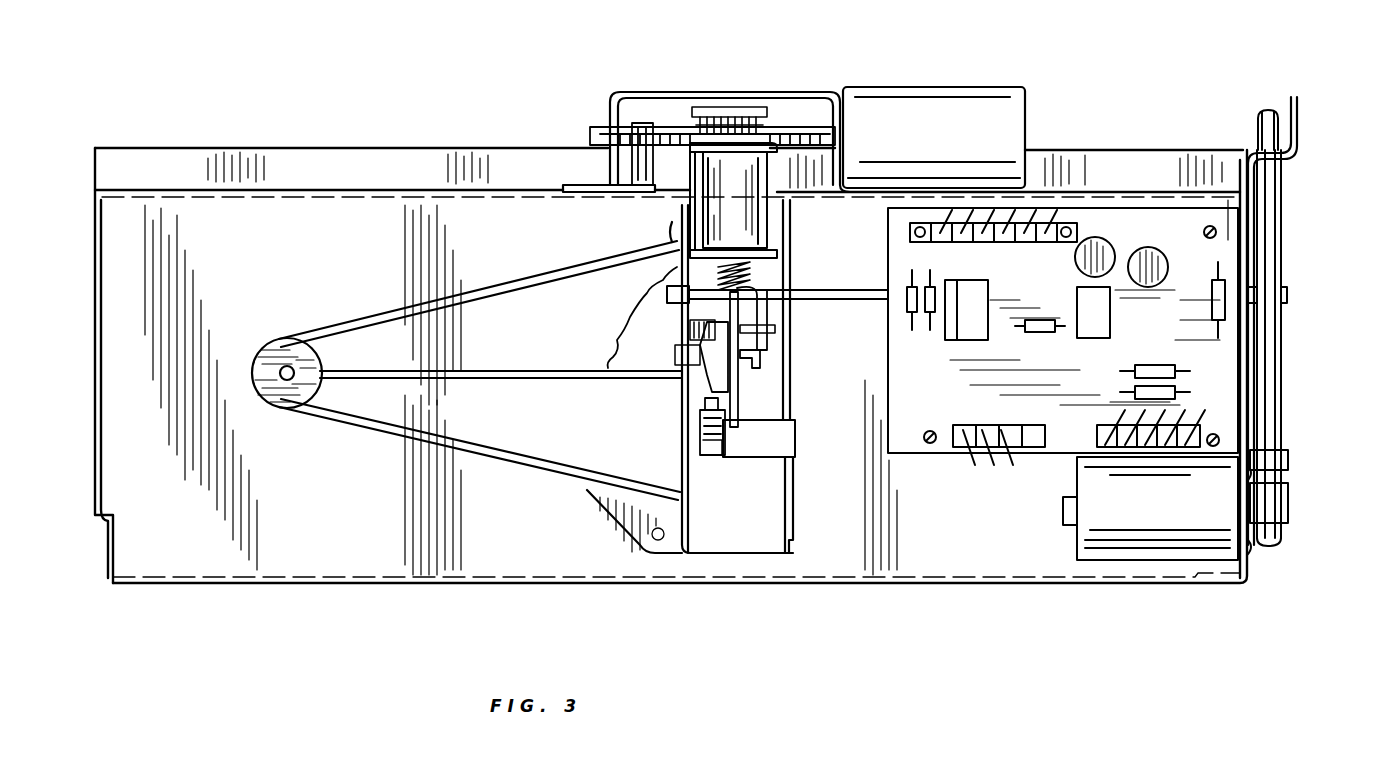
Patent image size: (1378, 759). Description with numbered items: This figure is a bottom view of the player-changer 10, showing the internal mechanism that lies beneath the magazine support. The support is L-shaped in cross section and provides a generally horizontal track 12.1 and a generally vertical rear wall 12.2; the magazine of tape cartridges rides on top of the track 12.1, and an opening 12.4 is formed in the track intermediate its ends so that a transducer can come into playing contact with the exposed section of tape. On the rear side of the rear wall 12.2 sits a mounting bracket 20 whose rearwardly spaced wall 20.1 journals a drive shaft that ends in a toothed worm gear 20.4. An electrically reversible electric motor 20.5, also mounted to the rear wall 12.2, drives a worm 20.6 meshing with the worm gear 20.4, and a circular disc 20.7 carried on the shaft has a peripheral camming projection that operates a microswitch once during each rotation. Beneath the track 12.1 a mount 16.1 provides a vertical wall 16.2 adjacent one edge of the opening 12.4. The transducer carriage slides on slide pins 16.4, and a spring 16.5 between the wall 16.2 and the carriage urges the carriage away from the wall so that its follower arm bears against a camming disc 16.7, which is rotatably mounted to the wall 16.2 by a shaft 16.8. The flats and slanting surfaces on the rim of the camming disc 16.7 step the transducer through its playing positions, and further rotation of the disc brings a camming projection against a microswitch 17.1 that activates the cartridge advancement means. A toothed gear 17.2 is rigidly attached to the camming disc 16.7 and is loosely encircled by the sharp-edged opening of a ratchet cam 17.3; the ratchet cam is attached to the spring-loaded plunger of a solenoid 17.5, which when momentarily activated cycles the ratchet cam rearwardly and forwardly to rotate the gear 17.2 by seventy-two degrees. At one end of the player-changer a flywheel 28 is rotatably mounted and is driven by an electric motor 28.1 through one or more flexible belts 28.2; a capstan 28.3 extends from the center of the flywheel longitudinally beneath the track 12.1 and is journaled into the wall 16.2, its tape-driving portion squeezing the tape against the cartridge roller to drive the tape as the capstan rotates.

The player-changer 10 is at (338, 597).
The track 12.1 is at (245, 540).
The rear wall 12.2 is at (340, 190).
The opening 12.4 is at (780, 508).
The mount 16.1 is at (555, 430).
The vertical wall 16.2 is at (767, 318).
The slide pins 16.4 is at (775, 330).
The spring 16.5 is at (690, 330).
The camming disc 16.7 is at (722, 365).
The shaft 16.8 is at (680, 352).
The microswitch 17.1 is at (705, 452).
The toothed gear 17.2 is at (745, 370).
The ratchet cam 17.3 is at (759, 438).
The solenoid 17.5 is at (599, 229).
The mounting bracket 20 is at (610, 165).
The rearwardly spaced wall 20.1 is at (640, 92).
The worm gear 20.4 is at (795, 127).
The electric motor 20.5 is at (958, 146).
The worm 20.6 is at (735, 107).
The circular disc 20.7 is at (705, 107).
The flywheel 28 is at (1280, 258).
The electric motor 28.1 is at (1150, 508).
The flexible belts 28.2 is at (1280, 405).
The capstan 28.3 is at (848, 297).